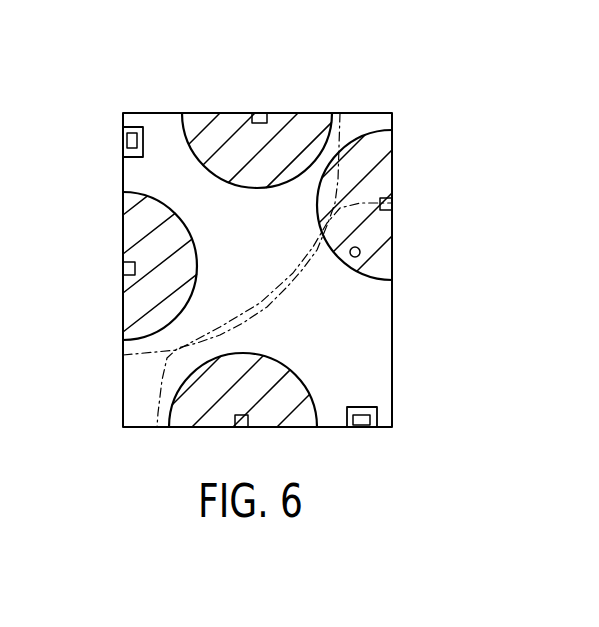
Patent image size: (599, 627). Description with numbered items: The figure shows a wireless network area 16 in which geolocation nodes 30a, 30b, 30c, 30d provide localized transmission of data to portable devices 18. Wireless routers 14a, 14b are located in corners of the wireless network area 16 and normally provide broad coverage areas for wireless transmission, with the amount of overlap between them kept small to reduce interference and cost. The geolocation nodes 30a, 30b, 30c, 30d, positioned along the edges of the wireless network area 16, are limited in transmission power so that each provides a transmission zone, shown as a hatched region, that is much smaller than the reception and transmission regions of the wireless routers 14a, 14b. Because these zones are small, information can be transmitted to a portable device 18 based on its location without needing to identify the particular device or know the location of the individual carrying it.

The wireless network area 16 is at (382, 84).
The wireless router 14a is at (362, 428).
The wireless router 14b is at (127, 140).
The portable device 18 is at (360, 253).
The geolocation node 30a is at (123, 270).
The geolocation node 30b is at (240, 429).
The geolocation node 30c is at (393, 203).
The geolocation node 30d is at (259, 113).